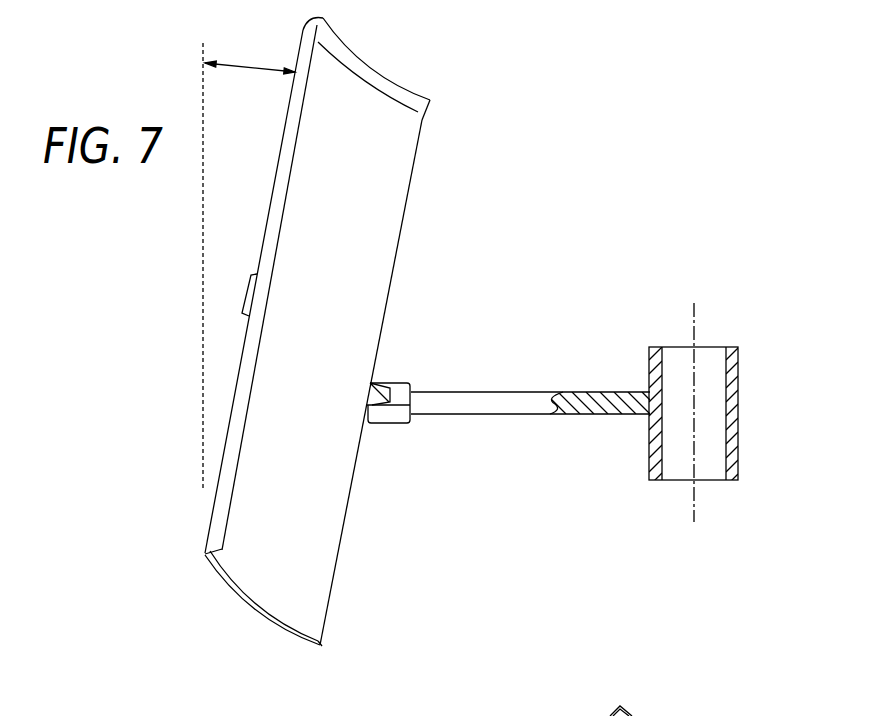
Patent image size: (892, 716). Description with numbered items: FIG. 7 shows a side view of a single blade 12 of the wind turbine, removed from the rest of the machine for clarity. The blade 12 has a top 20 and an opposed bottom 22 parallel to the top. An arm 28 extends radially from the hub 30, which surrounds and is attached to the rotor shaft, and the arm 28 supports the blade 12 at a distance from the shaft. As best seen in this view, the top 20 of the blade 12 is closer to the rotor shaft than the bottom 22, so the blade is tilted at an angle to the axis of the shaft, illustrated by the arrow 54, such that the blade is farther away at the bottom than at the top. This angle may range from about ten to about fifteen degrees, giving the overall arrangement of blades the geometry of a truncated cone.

The blade 12 is at (478, 145).
The top 20 is at (360, 102).
The bottom 22 is at (262, 620).
The arm 28 is at (482, 402).
The hub 30 is at (737, 378).
The arrow 54 is at (250, 62).